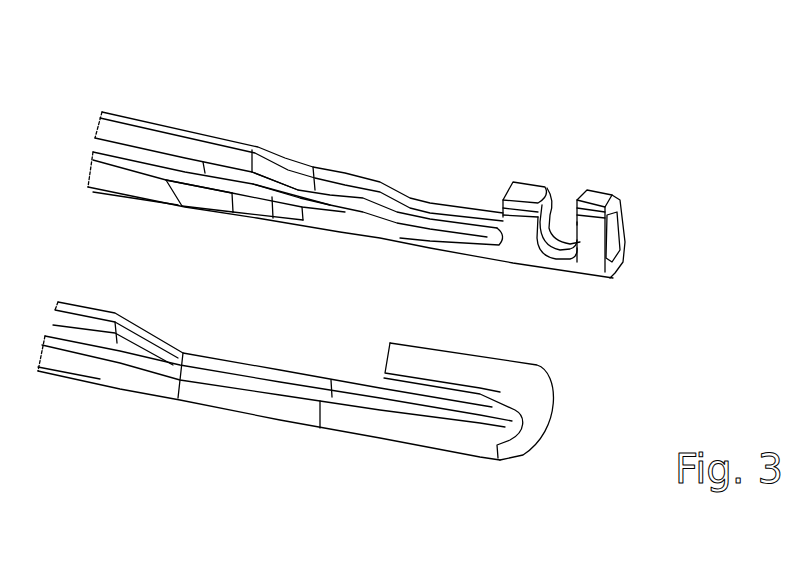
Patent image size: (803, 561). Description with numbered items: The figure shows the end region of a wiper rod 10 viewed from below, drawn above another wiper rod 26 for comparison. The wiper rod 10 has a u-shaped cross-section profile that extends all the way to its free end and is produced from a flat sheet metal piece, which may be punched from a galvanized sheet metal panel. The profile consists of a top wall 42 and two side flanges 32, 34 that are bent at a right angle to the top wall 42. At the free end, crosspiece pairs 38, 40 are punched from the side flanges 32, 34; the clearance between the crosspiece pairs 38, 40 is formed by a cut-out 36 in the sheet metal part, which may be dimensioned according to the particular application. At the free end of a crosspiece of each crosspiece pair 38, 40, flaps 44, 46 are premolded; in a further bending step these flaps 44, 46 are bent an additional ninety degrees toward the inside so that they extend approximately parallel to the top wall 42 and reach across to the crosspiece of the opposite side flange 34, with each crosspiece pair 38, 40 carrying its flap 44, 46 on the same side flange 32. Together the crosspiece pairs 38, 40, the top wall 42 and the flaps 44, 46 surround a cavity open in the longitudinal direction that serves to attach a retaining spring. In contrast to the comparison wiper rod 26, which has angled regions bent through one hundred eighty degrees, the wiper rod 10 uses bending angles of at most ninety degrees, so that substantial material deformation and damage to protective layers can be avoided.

The wiper rod 10 is at (180, 143).
The wiper rod 26 is at (80, 370).
The side flange 32 is at (285, 142).
The side flange 34 is at (273, 215).
The cut-out 36 is at (566, 213).
The crosspiece pair 38 is at (516, 240).
The crosspiece pair 40 is at (592, 247).
The top wall 42 is at (626, 265).
The flap 44 is at (518, 180).
The flap 46 is at (602, 203).